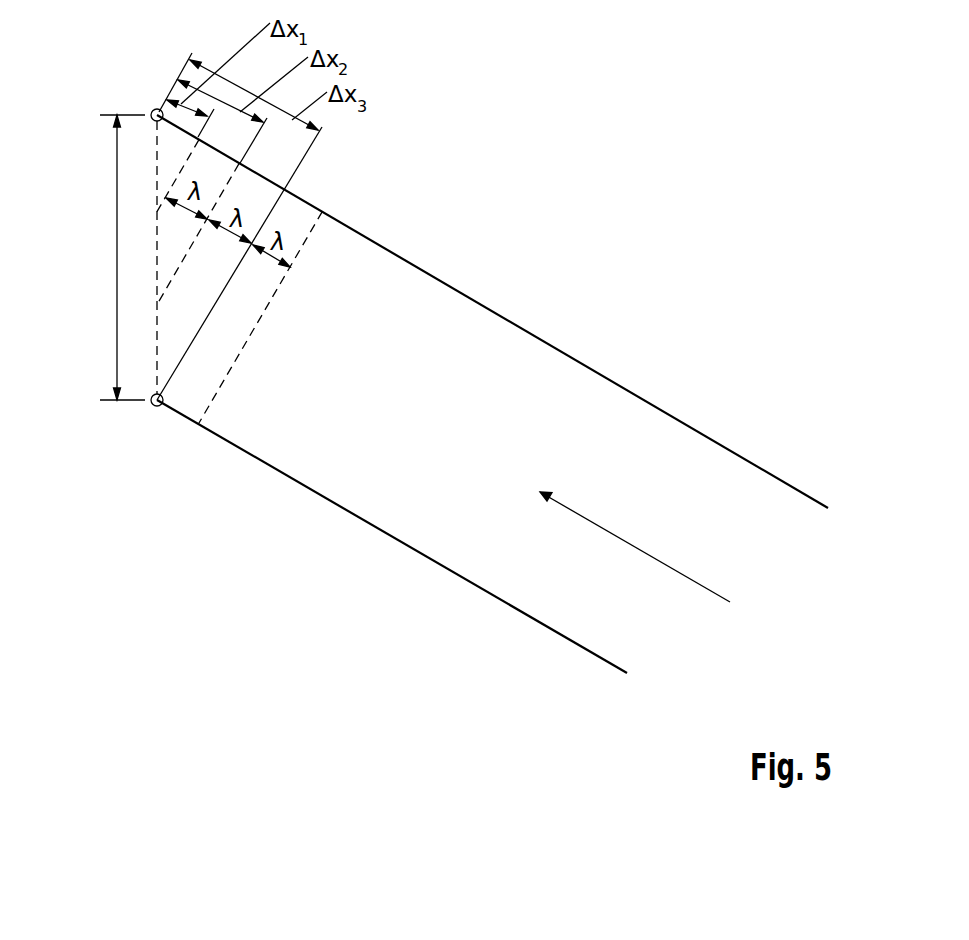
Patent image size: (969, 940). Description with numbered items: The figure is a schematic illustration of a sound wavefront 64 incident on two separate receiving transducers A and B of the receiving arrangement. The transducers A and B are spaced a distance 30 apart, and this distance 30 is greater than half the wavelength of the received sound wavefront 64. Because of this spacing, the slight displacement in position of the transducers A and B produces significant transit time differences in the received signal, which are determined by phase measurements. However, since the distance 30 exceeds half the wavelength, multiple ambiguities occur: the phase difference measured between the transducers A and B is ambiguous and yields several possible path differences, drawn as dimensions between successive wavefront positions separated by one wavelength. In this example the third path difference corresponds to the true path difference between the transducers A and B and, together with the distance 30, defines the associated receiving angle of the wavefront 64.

The distance 30 is at (115, 257).
The sound wavefront 64 is at (587, 518).
The transducer A is at (157, 101).
The transducer B is at (157, 417).